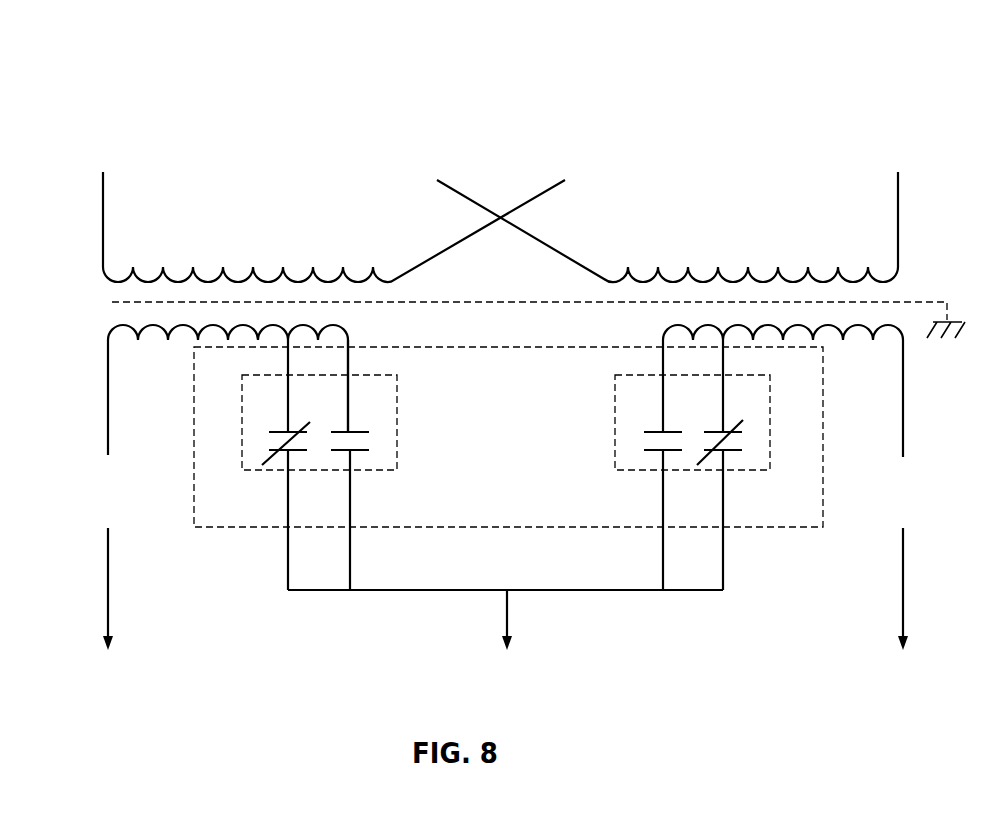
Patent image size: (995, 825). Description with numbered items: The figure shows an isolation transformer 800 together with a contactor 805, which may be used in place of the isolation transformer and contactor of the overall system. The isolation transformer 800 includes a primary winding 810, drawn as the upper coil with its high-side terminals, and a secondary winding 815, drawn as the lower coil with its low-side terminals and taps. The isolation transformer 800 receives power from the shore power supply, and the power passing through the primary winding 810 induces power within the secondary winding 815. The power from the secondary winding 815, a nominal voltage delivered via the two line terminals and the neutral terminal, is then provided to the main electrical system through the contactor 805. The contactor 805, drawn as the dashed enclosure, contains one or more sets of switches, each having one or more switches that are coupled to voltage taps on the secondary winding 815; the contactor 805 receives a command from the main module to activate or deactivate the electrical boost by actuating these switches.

The isolation transformer 800 is at (137, 58).
The contactor 805 is at (767, 528).
The primary winding 810 is at (86, 251).
The secondary winding 815 is at (87, 347).